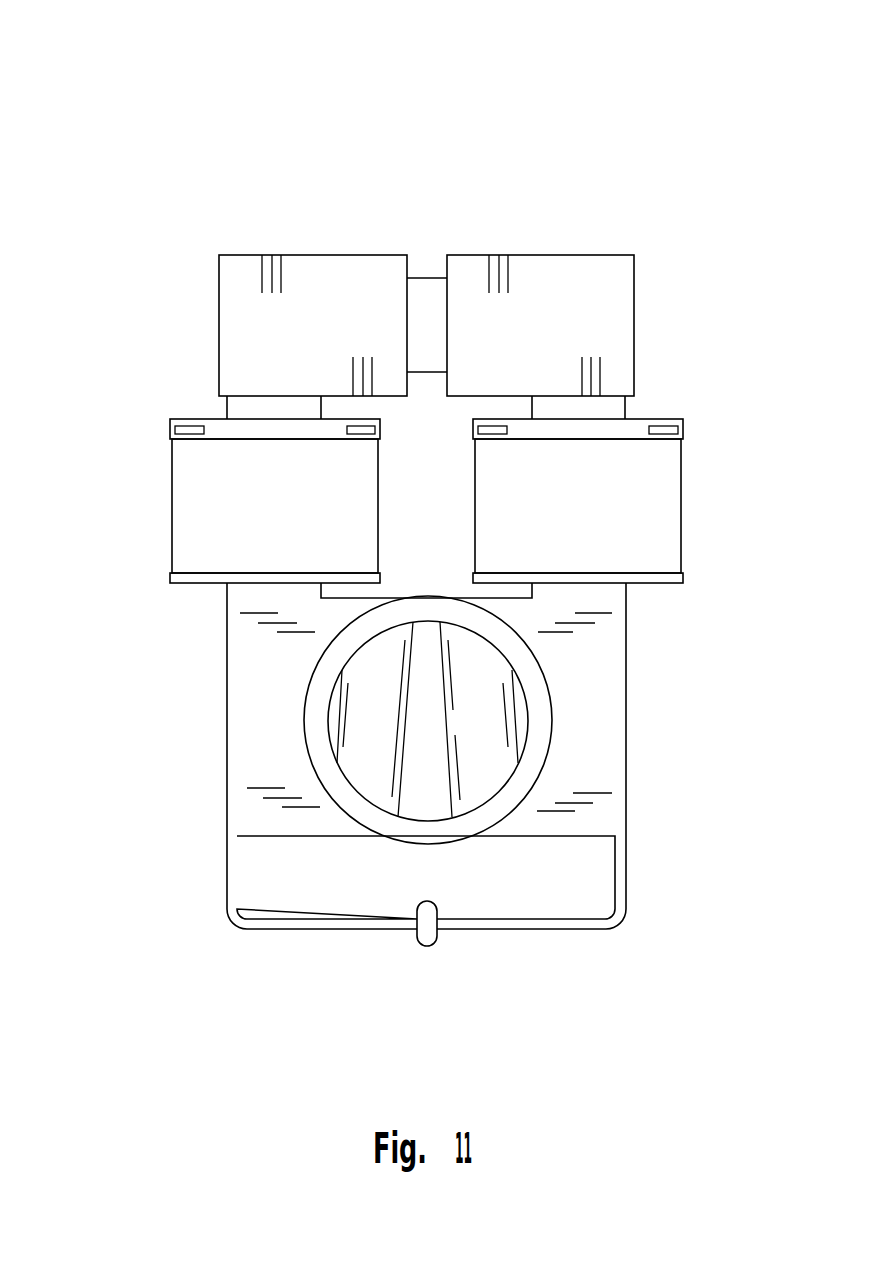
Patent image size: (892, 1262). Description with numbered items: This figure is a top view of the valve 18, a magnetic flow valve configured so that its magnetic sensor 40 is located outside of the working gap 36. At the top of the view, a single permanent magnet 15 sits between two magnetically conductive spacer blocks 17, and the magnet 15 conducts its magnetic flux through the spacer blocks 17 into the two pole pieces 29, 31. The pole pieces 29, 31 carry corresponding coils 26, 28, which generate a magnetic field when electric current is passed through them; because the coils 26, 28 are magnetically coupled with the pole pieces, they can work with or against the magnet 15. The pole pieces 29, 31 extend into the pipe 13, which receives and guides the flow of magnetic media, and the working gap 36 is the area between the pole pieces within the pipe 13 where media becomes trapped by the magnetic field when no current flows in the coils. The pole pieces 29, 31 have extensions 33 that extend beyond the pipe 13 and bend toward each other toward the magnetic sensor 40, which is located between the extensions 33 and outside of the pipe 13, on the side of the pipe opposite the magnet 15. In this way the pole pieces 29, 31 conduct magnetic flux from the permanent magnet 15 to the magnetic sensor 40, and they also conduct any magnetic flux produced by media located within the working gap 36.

The valve 18 is at (722, 128).
The spacer block 17 is at (318, 275).
The permanent magnet 15 is at (428, 293).
The coil 26 is at (202, 495).
The coil 28 is at (655, 500).
The pole piece 29 is at (255, 655).
The pole piece 31 is at (605, 763).
The pipe 13 is at (320, 747).
The working gap 36 is at (432, 725).
The extension 33 is at (333, 930).
The magnetic sensor 40 is at (427, 945).